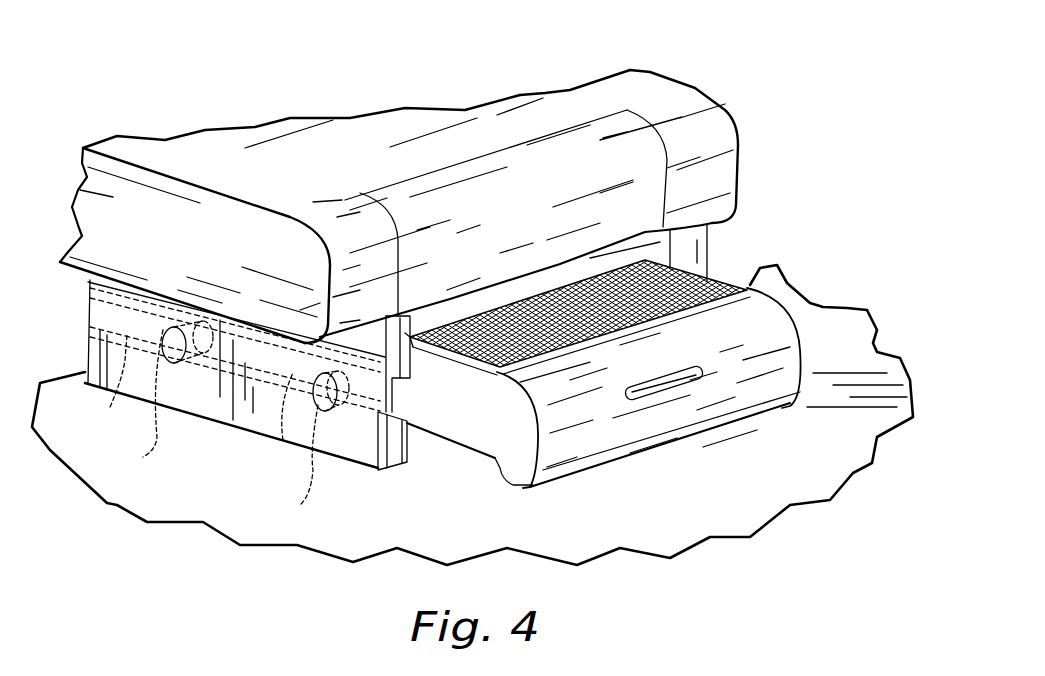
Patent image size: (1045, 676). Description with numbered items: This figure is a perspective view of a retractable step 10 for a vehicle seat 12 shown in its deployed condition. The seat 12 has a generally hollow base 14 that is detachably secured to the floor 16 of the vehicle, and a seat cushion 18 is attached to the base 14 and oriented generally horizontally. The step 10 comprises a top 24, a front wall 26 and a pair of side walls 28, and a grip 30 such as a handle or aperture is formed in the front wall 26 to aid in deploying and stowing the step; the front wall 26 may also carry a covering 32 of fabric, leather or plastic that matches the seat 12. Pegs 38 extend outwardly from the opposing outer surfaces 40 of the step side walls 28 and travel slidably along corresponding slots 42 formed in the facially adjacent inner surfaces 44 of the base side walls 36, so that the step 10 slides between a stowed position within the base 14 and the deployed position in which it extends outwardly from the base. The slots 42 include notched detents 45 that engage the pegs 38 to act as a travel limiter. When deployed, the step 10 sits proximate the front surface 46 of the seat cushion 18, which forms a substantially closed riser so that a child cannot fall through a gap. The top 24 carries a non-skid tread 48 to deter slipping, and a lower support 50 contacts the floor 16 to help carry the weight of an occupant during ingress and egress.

The retractable step 10 is at (674, 457).
The vehicle seat 12 is at (298, 92).
The base 14 is at (212, 415).
The floor 16 is at (760, 500).
The seat cushion 18 is at (643, 82).
The top 24 is at (753, 277).
The front wall 26 is at (588, 440).
The side walls 28 is at (838, 338).
The grip 30 is at (682, 386).
The covering 32 is at (743, 372).
The base side walls 36 is at (712, 236).
The pegs 38 is at (110, 407).
The outer surfaces 40 is at (750, 272).
The slots 42 is at (412, 394).
The inner surfaces 44 is at (420, 425).
The notched detents 45 is at (143, 457).
The front surface 46 is at (539, 222).
The non-skid tread 48 is at (720, 290).
The lower support 50 is at (512, 484).